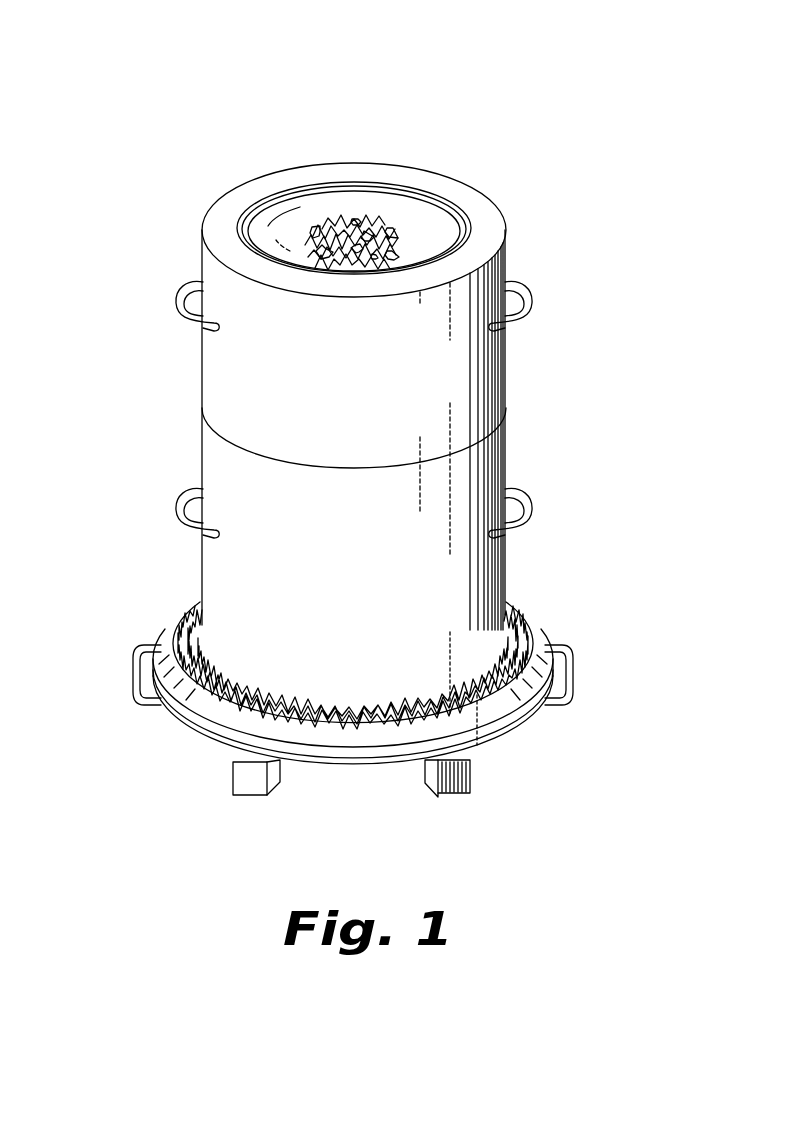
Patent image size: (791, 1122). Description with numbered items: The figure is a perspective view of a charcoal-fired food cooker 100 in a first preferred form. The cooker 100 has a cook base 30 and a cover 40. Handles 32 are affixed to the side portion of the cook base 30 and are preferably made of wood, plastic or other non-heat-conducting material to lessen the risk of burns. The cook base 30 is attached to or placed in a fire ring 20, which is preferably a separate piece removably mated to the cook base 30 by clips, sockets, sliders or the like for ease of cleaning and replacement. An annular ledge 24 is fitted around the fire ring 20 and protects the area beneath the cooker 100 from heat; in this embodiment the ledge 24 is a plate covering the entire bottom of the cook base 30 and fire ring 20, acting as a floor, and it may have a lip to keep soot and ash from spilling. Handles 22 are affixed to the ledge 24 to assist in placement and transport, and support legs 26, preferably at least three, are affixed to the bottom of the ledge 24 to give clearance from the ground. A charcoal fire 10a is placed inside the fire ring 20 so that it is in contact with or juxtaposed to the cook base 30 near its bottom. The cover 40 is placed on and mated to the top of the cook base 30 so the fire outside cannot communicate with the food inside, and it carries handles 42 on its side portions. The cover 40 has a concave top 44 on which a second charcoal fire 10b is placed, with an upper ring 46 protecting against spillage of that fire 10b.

The charcoal-fired cooker 100 is at (484, 104).
The charcoal fire 10a is at (470, 698).
The charcoal fire 10b is at (343, 225).
The fire ring 20 is at (177, 697).
The handles 22 is at (137, 660).
The annular ledge 24 is at (190, 727).
The support legs 26 is at (280, 780).
The cook base 30 is at (364, 590).
The handles 32 is at (183, 495).
The cover 40 is at (477, 393).
The handles 42 is at (182, 285).
The concave top 44 is at (452, 225).
The upper ring 46 is at (505, 223).